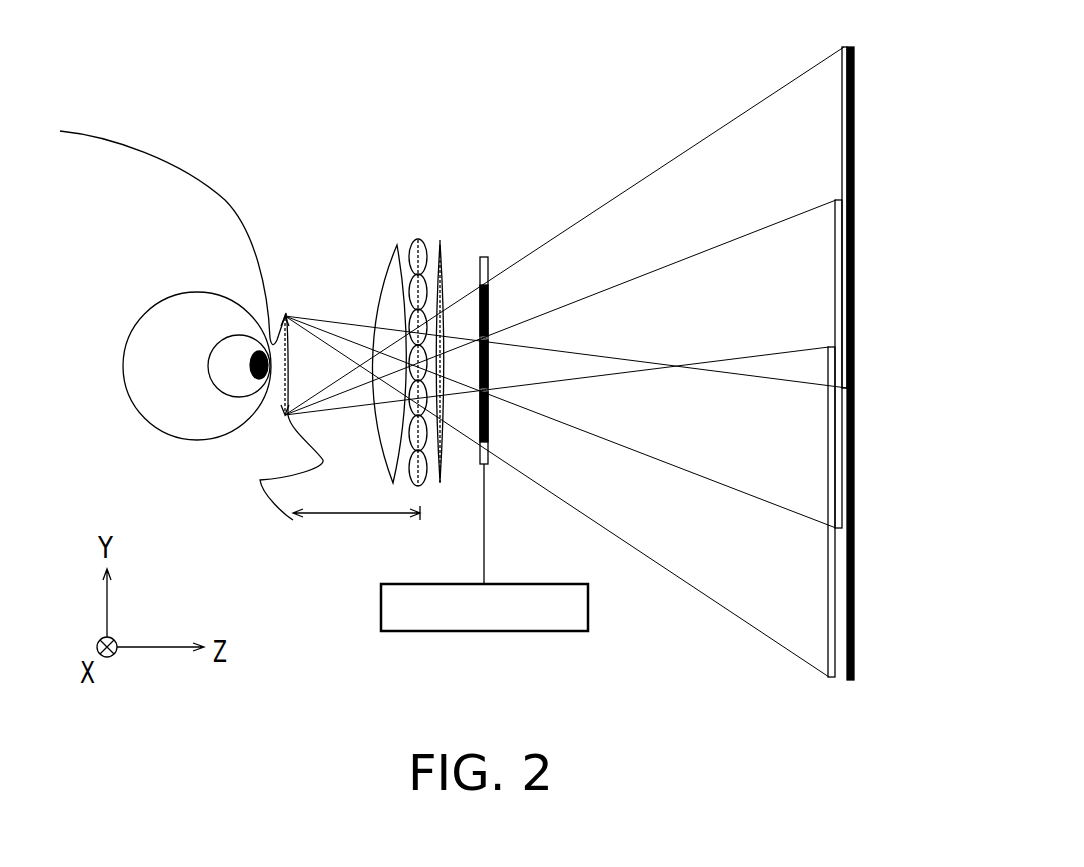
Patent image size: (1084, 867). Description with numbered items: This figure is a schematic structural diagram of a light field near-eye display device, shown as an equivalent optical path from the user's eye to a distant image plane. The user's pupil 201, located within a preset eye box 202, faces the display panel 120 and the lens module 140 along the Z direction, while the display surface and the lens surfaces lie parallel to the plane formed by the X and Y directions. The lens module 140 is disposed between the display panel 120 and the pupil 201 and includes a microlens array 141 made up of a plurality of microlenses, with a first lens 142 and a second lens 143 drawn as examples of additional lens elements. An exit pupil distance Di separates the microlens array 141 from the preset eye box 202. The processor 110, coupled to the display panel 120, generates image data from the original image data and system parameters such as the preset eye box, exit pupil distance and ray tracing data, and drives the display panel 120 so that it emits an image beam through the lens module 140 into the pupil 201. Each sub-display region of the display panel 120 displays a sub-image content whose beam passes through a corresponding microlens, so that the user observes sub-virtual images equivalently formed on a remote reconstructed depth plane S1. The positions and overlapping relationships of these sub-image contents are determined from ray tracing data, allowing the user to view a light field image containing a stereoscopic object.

The processor 110 is at (590, 608).
The display panel 120 is at (546, 386).
The lens module 140 is at (447, 342).
The microlens array 141 is at (447, 342).
The first lens 142 is at (398, 489).
The second lens 143 is at (445, 489).
The pupil 201 is at (273, 330).
The preset eye box 202 is at (287, 360).
The remote reconstructed depth plane S1 is at (883, 341).
The exit pupil distance Di is at (356, 501).